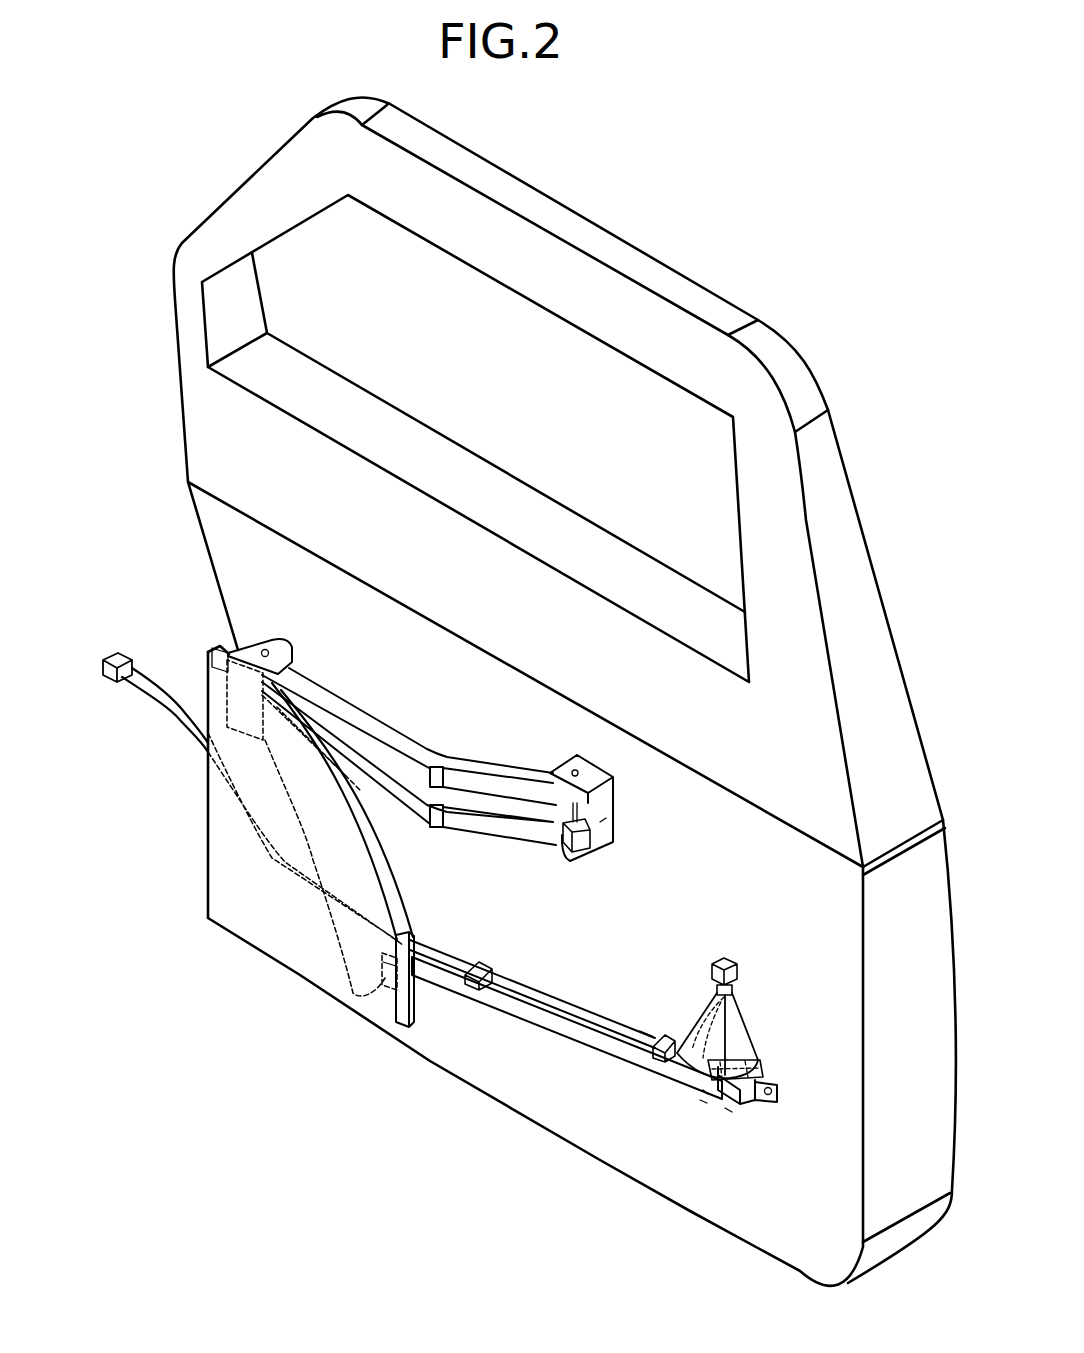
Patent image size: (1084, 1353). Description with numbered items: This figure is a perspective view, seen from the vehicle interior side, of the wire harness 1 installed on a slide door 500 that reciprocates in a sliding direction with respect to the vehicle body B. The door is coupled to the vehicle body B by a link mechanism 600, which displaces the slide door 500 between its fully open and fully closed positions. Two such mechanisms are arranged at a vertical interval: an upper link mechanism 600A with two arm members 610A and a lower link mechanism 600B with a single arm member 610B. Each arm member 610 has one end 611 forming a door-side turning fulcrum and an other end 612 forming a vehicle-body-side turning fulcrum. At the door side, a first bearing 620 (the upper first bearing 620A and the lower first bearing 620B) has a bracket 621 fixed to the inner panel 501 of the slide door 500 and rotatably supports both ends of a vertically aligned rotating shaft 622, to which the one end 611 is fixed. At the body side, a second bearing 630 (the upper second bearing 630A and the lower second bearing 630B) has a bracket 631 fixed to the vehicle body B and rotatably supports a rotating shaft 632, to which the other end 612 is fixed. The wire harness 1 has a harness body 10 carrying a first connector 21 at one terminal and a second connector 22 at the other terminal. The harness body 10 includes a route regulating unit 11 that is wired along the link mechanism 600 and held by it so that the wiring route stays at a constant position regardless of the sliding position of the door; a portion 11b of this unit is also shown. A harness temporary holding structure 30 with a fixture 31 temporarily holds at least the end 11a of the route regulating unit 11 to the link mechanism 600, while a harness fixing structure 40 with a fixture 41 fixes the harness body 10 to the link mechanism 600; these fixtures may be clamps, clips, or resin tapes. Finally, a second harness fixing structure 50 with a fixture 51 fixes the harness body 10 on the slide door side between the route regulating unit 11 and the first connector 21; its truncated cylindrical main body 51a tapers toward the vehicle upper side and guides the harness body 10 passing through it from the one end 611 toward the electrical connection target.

The slide door 500 is at (627, 202).
The inner panel 501 is at (662, 1168).
The vehicle body B is at (227, 882).
The wire harness 1 is at (180, 820).
The harness body 10 is at (170, 728).
The second connector 22 is at (97, 683).
The second bearing 630 is at (227, 823).
The second bearing of upper link mechanism 630A is at (214, 672).
The second bearing of lower link mechanism 630B is at (372, 963).
The bracket 631 is at (236, 645).
The rotating shaft 632 is at (265, 648).
The other end of arm member 612 is at (293, 660).
The link mechanism 600 is at (492, 878).
The upper link mechanism 600A is at (409, 723).
The lower link mechanism 600B is at (566, 1070).
The arm member 610 is at (409, 688).
The arm member of upper link mechanism 610A is at (358, 755).
The arm member of lower link mechanism 610B is at (517, 1032).
The harness fixing structure 40 is at (409, 791).
The fixture 41 is at (409, 791).
The first bearing 620 is at (675, 985).
The first bearing of upper link mechanism 620A is at (627, 792).
The first bearing of lower link mechanism 620B is at (744, 1115).
The one end of arm member 611 is at (556, 820).
The bracket 621 is at (600, 820).
The rotating shaft 622 is at (572, 852).
The route regulating unit 11 is at (567, 1007).
The end of route regulating unit 11a is at (630, 1000).
The rail stopper 11b is at (493, 973).
The harness temporary holding structure 30 is at (679, 1000).
The fixture 31 is at (670, 1035).
The first connector 21 is at (725, 957).
The second harness fixing structure 50 is at (756, 1020).
The fixture 51 is at (750, 997).
The main body 51a is at (743, 1047).